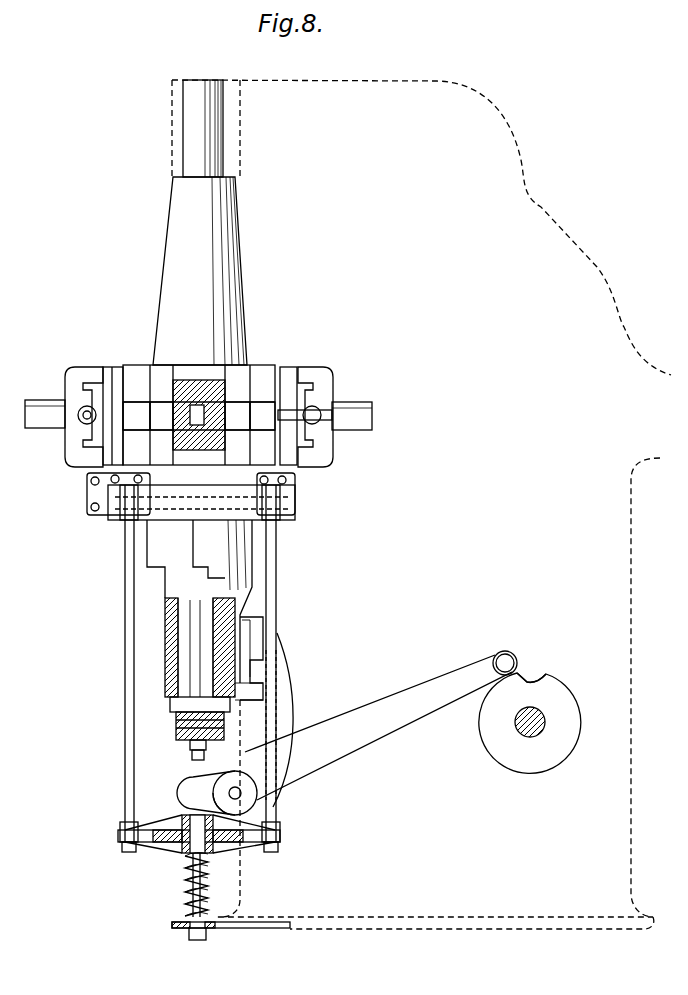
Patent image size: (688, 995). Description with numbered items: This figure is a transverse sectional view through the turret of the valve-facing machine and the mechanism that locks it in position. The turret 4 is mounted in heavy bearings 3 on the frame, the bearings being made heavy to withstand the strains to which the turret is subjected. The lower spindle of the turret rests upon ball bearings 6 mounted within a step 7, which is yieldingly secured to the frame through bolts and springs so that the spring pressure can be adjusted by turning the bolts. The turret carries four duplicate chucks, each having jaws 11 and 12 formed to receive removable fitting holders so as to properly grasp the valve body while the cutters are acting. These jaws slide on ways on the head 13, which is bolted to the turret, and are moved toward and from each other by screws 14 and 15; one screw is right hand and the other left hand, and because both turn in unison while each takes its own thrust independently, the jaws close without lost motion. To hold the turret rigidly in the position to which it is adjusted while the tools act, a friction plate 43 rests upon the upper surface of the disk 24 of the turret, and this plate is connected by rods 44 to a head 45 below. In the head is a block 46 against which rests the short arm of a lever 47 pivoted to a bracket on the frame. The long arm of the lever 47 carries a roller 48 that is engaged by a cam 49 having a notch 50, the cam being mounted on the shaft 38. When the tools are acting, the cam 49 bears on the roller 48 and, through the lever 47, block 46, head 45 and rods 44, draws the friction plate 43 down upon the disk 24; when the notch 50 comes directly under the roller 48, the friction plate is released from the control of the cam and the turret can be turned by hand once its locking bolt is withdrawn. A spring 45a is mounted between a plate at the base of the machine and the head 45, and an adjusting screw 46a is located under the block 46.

The bearings 3 is at (197, 388).
The turret 4 is at (145, 366).
The ball bearings 6 is at (176, 722).
The step 7 is at (183, 750).
The jaw 11 is at (247, 416).
The jaw 12 is at (150, 415).
The head 13 is at (197, 405).
The screw 14 is at (222, 405).
The screw 15 is at (170, 402).
The disk 24 is at (108, 497).
The shaft 38 is at (541, 717).
The friction plate 43 is at (292, 486).
The rods 44 is at (276, 622).
The head 45 is at (170, 842).
The spring 45a is at (186, 904).
The block 46 is at (195, 812).
The adjusting screw 46a is at (186, 944).
The lever 47 is at (378, 727).
The roller 48 is at (535, 646).
The cam 49 is at (527, 687).
The notch 50 is at (530, 715).